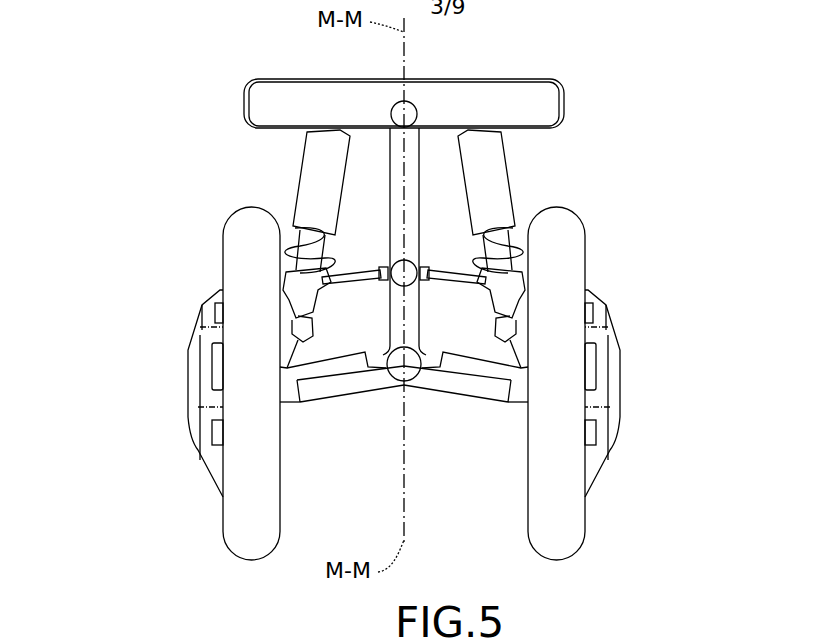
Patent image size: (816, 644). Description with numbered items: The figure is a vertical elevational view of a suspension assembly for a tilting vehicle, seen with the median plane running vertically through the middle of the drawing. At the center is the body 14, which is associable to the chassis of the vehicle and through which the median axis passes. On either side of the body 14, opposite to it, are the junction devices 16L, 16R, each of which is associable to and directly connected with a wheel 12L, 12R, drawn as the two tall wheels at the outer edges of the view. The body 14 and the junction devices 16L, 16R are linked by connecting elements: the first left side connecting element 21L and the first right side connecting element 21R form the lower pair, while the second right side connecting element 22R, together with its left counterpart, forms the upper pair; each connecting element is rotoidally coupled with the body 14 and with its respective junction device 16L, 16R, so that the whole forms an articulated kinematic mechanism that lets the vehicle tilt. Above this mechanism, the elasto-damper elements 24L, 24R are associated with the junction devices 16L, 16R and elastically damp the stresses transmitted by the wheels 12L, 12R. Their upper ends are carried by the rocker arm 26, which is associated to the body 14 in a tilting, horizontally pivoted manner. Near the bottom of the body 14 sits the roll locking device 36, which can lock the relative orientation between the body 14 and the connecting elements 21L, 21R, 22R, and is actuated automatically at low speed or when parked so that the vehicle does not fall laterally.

The wheel 12R is at (247, 275).
The wheel 12L is at (575, 240).
The body 14 is at (413, 167).
The junction device 16R is at (290, 347).
The junction device 16L is at (520, 347).
The first right side connecting element 21R is at (346, 385).
The first left side connecting element 21L is at (467, 387).
The second right side connecting element 22R is at (300, 247).
The elasto-damper element 24R is at (315, 180).
The elasto-damper element 24L is at (492, 185).
The rocker arm 26 is at (502, 102).
The roll locking device 36 is at (413, 395).